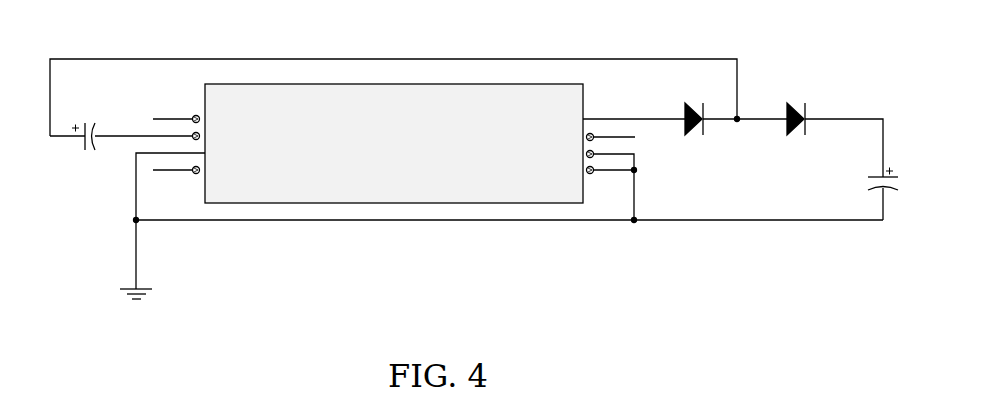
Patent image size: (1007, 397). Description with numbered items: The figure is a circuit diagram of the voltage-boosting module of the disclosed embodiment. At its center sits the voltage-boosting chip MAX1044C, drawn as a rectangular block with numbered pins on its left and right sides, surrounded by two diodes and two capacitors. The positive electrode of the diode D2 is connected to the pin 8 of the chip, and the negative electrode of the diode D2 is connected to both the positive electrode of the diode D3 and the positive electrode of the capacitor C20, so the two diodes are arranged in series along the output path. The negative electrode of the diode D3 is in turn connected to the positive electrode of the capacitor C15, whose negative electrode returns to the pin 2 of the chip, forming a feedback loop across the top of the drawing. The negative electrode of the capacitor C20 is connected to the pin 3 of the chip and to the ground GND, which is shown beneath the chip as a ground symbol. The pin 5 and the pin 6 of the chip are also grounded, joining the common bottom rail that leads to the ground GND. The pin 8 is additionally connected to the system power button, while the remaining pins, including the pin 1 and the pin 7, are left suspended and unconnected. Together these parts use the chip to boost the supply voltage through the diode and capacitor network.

The voltage-boosting chip MAX1044C is at (394, 151).
The capacitor C15 is at (72, 128).
The capacitor C20 is at (892, 194).
The diode D2 is at (735, 111).
The diode D3 is at (835, 132).
The ground GND is at (135, 270).
The pin 1 is at (176, 114).
The pin 2 is at (147, 131).
The pin 3 is at (176, 165).
The pin 5 is at (611, 165).
The pin 6 is at (611, 180).
The pin 7 is at (611, 132).
The pin 8 is at (634, 111).